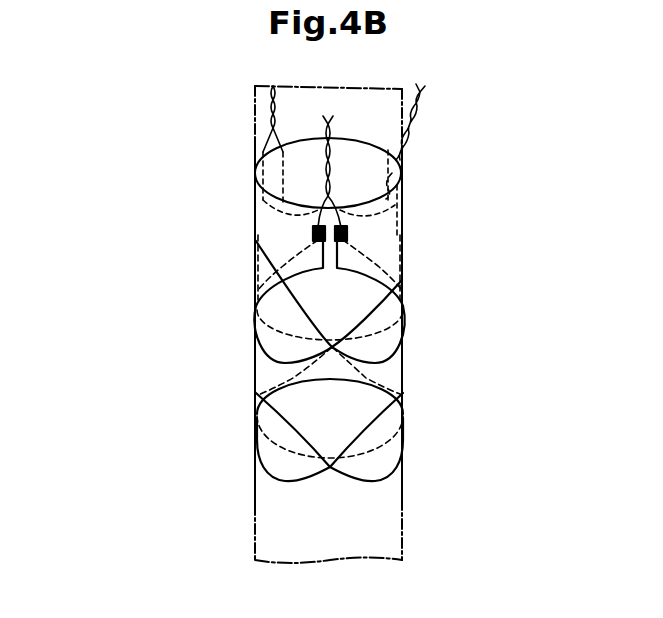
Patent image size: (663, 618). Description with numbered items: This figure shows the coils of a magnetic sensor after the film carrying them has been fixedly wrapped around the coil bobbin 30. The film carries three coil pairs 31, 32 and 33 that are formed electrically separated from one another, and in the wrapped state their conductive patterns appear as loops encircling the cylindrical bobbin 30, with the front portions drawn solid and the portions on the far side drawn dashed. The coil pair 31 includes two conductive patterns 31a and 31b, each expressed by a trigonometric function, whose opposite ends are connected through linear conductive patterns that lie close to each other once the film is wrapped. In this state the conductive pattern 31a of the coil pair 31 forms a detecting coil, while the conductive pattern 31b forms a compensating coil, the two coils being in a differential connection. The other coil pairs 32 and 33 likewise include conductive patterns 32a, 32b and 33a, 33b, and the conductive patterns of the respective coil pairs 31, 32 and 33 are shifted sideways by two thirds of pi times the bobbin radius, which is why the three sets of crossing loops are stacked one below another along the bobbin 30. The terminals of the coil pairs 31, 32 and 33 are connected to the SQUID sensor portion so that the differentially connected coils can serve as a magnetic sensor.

The coil bobbin 30 is at (440, 194).
The coil pair 31 is at (122, 215).
The conductive pattern 31a is at (284, 390).
The conductive pattern 31b is at (256, 242).
The coil pair 32 is at (527, 240).
The conductive pattern 32a is at (403, 394).
The conductive pattern 32b is at (402, 280).
The coil pair 33 is at (125, 385).
The conductive pattern 33a is at (290, 437).
The conductive pattern 33b is at (360, 383).